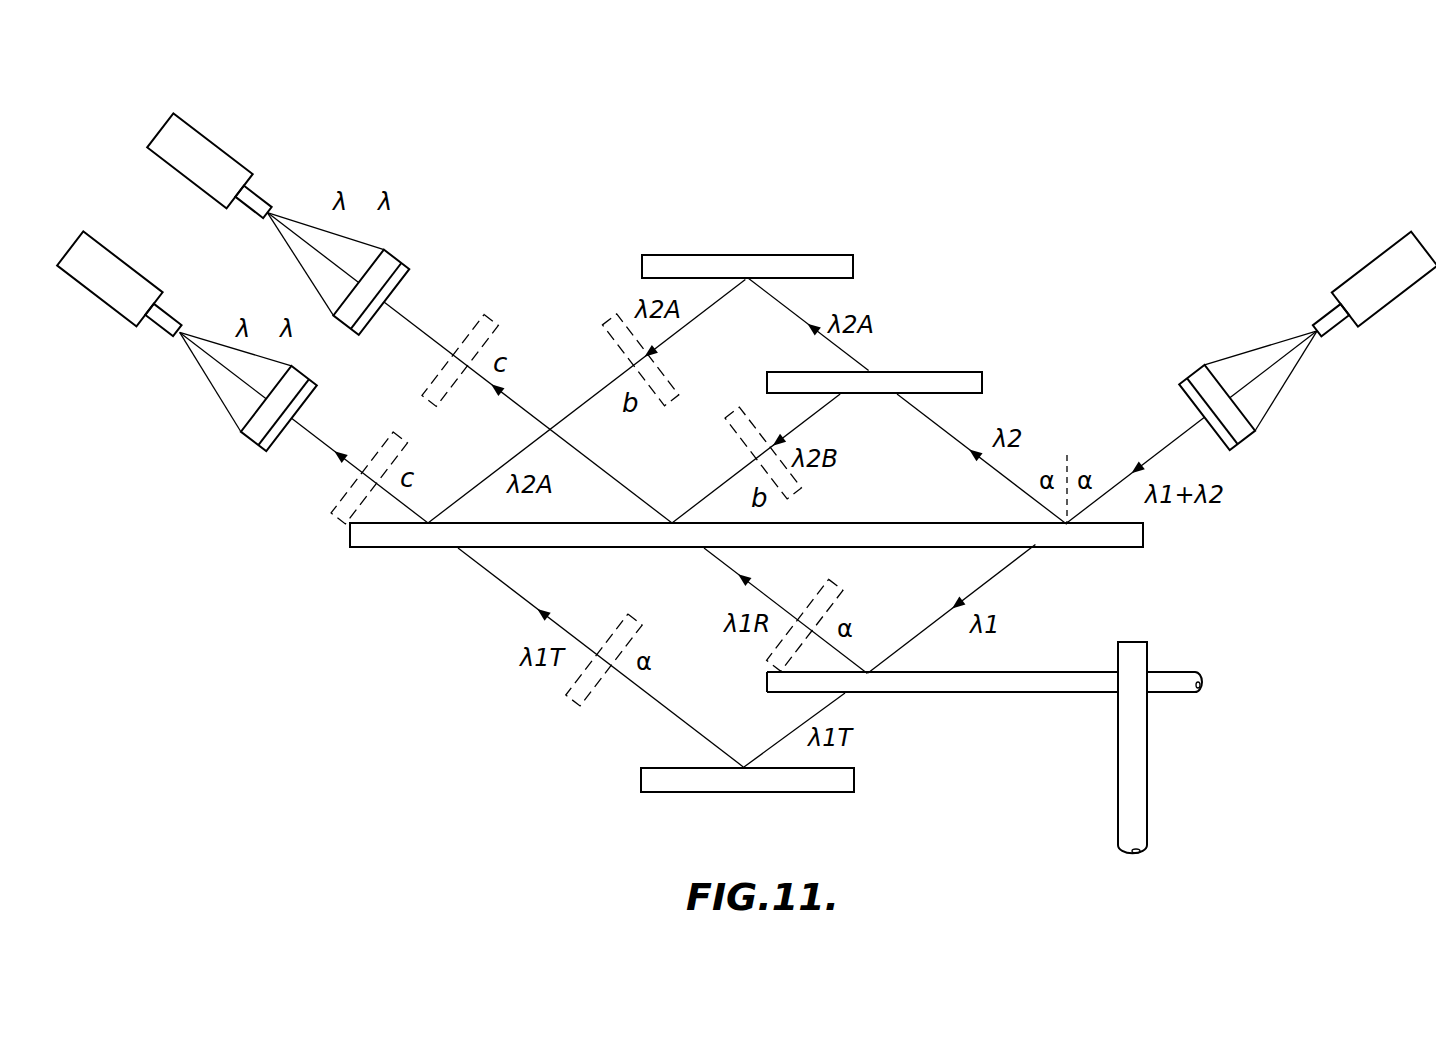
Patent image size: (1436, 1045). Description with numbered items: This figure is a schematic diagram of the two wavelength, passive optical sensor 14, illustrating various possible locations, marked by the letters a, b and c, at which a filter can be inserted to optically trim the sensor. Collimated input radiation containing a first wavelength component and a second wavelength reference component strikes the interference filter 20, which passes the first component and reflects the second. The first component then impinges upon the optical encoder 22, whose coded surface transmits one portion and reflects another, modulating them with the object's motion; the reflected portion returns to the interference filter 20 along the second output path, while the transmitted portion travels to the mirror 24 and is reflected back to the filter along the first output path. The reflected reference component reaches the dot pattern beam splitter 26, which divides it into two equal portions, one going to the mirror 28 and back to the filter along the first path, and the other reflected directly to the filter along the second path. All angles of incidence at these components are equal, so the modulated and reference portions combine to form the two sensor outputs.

The optical sensor 14 is at (406, 729).
The interference filter 20 is at (1143, 531).
The optical encoder 22 is at (1023, 693).
The mirror 24 is at (641, 779).
The dot pattern beam splitter 26 is at (982, 382).
The mirror 28 is at (853, 267).